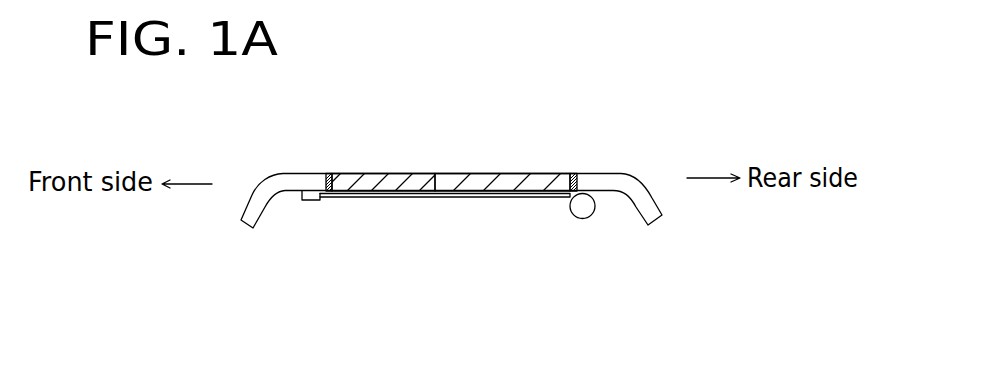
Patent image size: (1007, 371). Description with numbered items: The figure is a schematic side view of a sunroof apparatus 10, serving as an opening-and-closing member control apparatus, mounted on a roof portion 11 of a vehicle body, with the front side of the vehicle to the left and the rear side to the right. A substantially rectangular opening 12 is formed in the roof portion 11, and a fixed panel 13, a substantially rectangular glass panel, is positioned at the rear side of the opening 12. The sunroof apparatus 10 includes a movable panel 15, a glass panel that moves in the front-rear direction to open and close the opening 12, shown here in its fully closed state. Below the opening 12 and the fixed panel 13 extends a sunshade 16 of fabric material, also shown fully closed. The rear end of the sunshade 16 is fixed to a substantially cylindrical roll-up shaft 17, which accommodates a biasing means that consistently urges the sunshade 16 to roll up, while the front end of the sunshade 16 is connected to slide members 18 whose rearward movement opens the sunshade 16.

The sunroof apparatus 10 is at (565, 124).
The roof portion 11 is at (298, 173).
The opening 12 is at (336, 174).
The fixed panel 13 is at (482, 178).
The movable panel 15 is at (405, 177).
The sunshade 16 is at (508, 197).
The roll-up shaft 17 is at (594, 213).
The slide members 18 is at (310, 203).